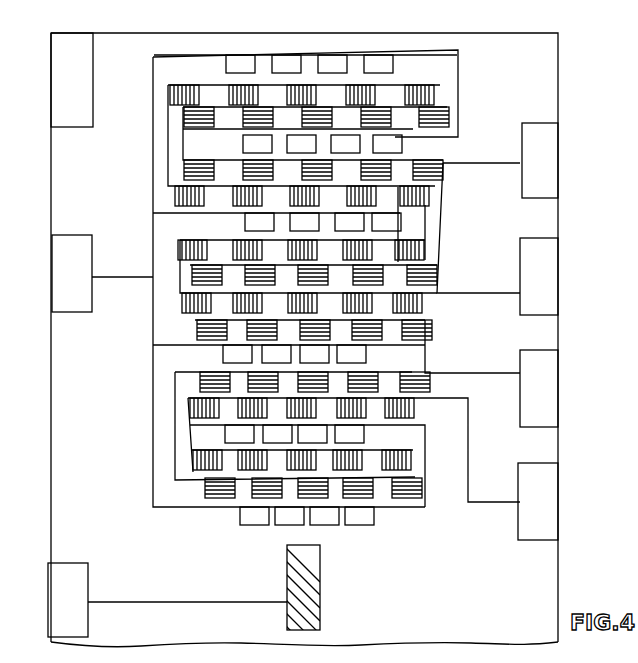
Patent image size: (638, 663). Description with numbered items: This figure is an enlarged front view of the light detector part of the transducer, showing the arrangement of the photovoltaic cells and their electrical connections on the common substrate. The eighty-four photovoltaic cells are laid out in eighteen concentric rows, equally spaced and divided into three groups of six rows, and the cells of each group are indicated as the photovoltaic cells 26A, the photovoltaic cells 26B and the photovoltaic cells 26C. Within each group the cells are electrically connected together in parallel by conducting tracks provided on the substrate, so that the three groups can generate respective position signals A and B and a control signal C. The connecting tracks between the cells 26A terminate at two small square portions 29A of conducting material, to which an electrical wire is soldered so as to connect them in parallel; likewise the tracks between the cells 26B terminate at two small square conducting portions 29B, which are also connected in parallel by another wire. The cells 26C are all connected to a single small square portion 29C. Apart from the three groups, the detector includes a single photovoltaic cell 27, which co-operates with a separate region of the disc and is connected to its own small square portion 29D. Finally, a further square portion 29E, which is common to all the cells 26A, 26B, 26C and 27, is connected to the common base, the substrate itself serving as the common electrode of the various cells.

The photovoltaic cells 26A is at (430, 92).
The photovoltaic cells 26B is at (435, 120).
The photovoltaic cells 26C is at (382, 68).
The single photovoltaic cell 27 is at (320, 563).
The small square portions of conducting material 29A is at (537, 256).
The small square conducting portions 29B is at (532, 170).
The small square portion 29C is at (75, 250).
The small square portion 29D is at (68, 580).
The further square portion 29E is at (80, 113).